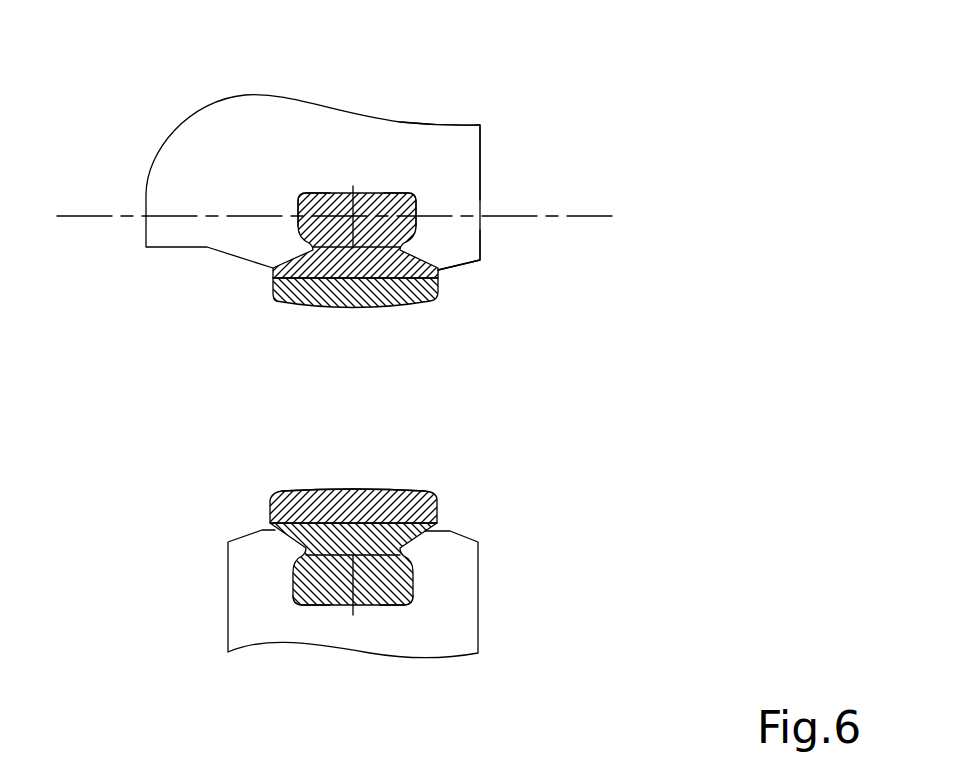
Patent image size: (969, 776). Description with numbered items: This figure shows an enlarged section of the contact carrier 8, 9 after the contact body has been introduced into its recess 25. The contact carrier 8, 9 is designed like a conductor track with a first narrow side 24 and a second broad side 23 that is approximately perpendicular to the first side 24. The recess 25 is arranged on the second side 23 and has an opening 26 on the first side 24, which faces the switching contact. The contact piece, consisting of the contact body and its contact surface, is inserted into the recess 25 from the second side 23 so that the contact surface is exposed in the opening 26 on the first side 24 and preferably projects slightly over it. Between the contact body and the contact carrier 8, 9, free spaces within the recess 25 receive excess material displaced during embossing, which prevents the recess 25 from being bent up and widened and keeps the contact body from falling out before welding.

The contact carrier 8 is at (262, 150).
The contact carrier 9 is at (448, 570).
The second side 23 is at (458, 170).
The first side 24 is at (478, 263).
The recess 25 is at (303, 218).
The opening 26 is at (315, 540).